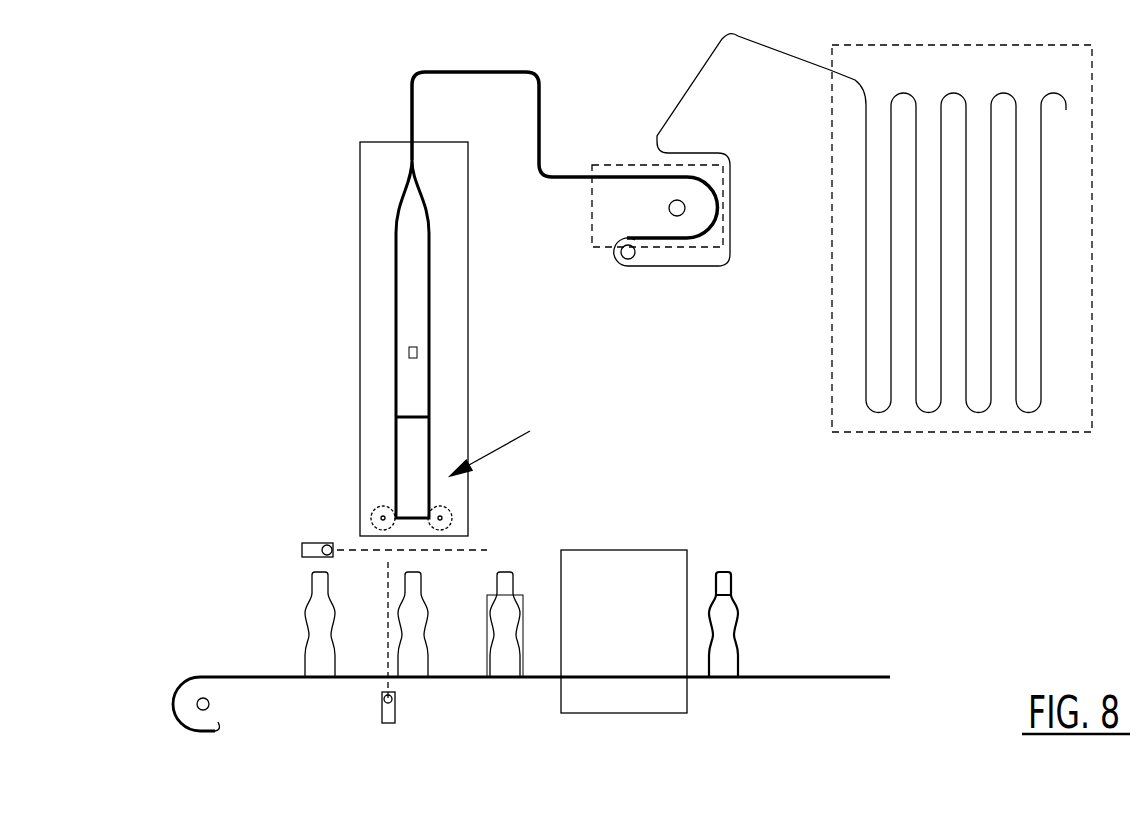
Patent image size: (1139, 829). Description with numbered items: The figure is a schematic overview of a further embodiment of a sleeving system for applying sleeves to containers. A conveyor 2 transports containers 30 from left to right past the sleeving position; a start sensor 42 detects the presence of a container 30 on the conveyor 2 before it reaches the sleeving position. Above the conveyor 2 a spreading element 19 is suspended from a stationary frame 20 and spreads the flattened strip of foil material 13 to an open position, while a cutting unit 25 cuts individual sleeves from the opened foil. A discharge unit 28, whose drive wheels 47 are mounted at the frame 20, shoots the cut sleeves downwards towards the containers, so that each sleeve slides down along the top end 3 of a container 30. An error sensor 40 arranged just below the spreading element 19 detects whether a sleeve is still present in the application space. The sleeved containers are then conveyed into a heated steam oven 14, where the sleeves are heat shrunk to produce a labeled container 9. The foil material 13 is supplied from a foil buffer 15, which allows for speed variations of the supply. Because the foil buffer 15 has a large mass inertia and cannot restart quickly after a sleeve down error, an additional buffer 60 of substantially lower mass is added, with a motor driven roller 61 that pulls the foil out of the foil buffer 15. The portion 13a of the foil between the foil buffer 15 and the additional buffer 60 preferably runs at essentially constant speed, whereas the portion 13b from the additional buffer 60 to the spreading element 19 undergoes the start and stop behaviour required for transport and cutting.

The conveyor 2 is at (270, 677).
The top end of the container 3 is at (418, 580).
The labeled container 9 is at (734, 615).
The foil material 13 is at (840, 223).
The portion of the foil material 13a is at (777, 52).
The portion of the foil material 13b is at (412, 94).
The heated steam oven 14 is at (624, 631).
The foil buffer 15 is at (1068, 416).
The spreading element 19 is at (413, 304).
The stationary frame 20 is at (452, 342).
The cutting unit 25 is at (415, 417).
The discharge unit 28 is at (530, 431).
The container 30 is at (335, 640).
The error sensor 40 is at (303, 547).
The start sensor 42 is at (382, 709).
The drive wheels 47 is at (372, 510).
The additional buffer 60 is at (597, 222).
The motor driven roller 61 is at (628, 259).